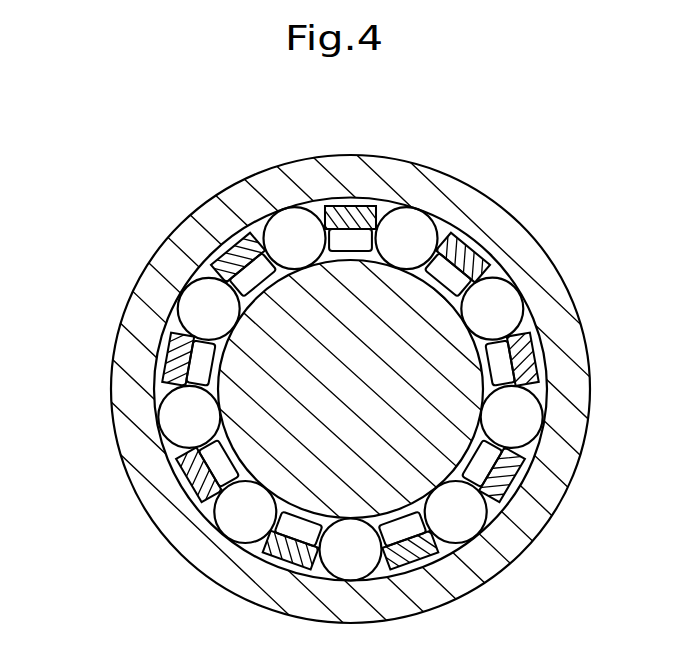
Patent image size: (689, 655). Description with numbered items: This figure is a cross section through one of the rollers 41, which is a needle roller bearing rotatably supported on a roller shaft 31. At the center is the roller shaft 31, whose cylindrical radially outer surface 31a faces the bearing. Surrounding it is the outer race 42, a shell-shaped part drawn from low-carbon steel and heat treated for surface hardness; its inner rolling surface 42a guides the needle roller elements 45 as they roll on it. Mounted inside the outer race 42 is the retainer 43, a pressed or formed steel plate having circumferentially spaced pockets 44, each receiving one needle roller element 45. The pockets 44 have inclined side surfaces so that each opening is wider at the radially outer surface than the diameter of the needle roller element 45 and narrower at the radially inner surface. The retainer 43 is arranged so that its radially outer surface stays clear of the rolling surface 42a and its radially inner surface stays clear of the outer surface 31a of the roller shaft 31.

The roller shaft 31 is at (252, 414).
The cylindrical radially outer surface of the roller shaft 31a is at (243, 462).
The roller 41 is at (182, 215).
The outer race 42 is at (153, 283).
The rolling surface of the outer race 42a is at (480, 247).
The retainer 43 is at (180, 362).
The pocket 44 is at (322, 227).
The needle roller element 45 is at (277, 224).